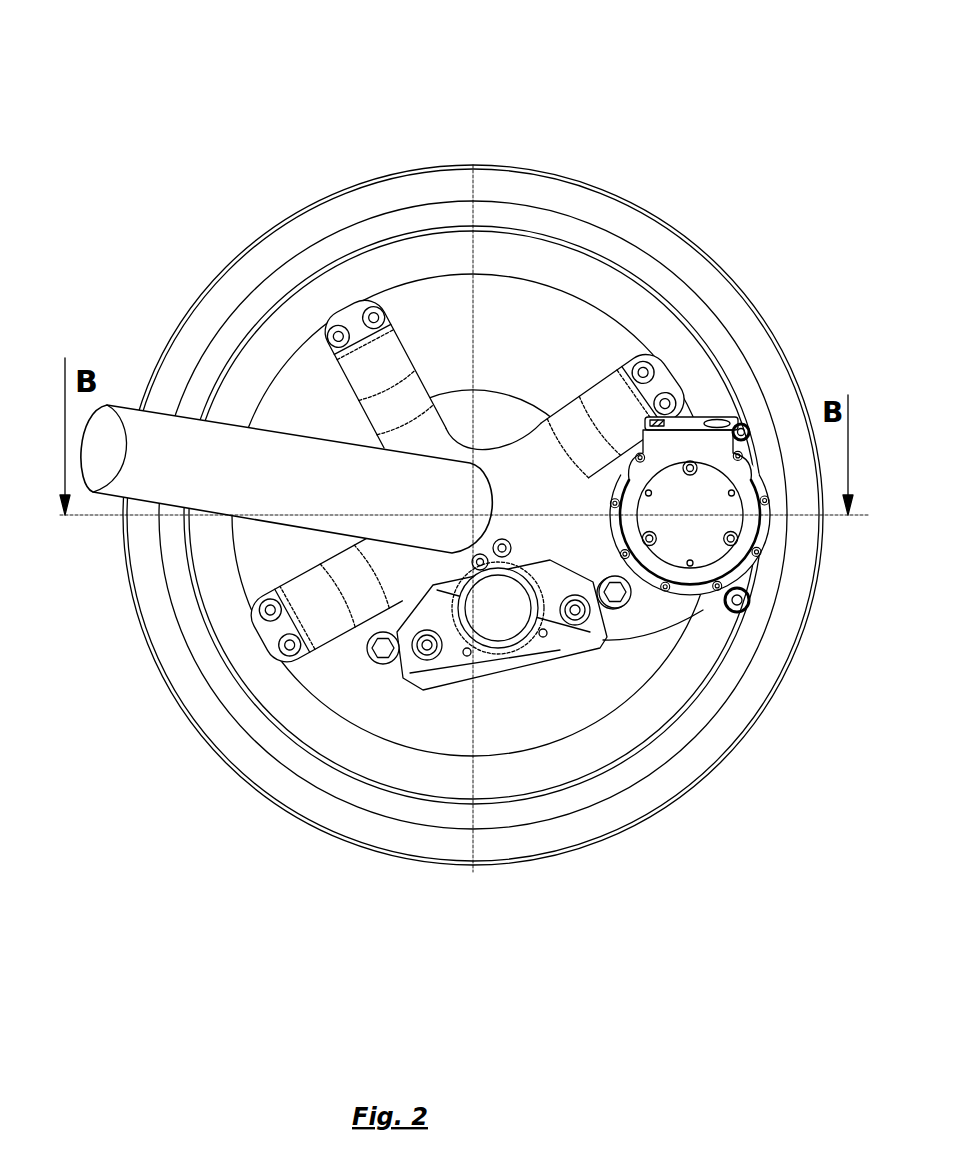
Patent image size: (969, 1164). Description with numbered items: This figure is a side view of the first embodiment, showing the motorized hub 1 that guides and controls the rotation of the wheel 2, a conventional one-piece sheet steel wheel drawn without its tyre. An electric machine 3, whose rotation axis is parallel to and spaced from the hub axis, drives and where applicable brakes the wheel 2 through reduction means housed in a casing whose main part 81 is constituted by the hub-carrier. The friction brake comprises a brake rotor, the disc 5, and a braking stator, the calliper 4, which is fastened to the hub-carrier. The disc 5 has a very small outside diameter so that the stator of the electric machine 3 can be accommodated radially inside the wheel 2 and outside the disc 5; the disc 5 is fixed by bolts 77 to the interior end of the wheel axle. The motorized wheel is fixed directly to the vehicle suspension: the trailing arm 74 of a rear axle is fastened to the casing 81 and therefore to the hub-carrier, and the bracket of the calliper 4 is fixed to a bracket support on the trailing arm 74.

The motorized hub 1 is at (246, 124).
The wheel 2 is at (433, 188).
The electric machine 3 is at (707, 552).
The brake calliper 4 is at (455, 655).
The disc 5 is at (643, 580).
The trailing arm 74 is at (218, 452).
The bolts 77 is at (542, 635).
The main part of the casing 81 is at (318, 385).